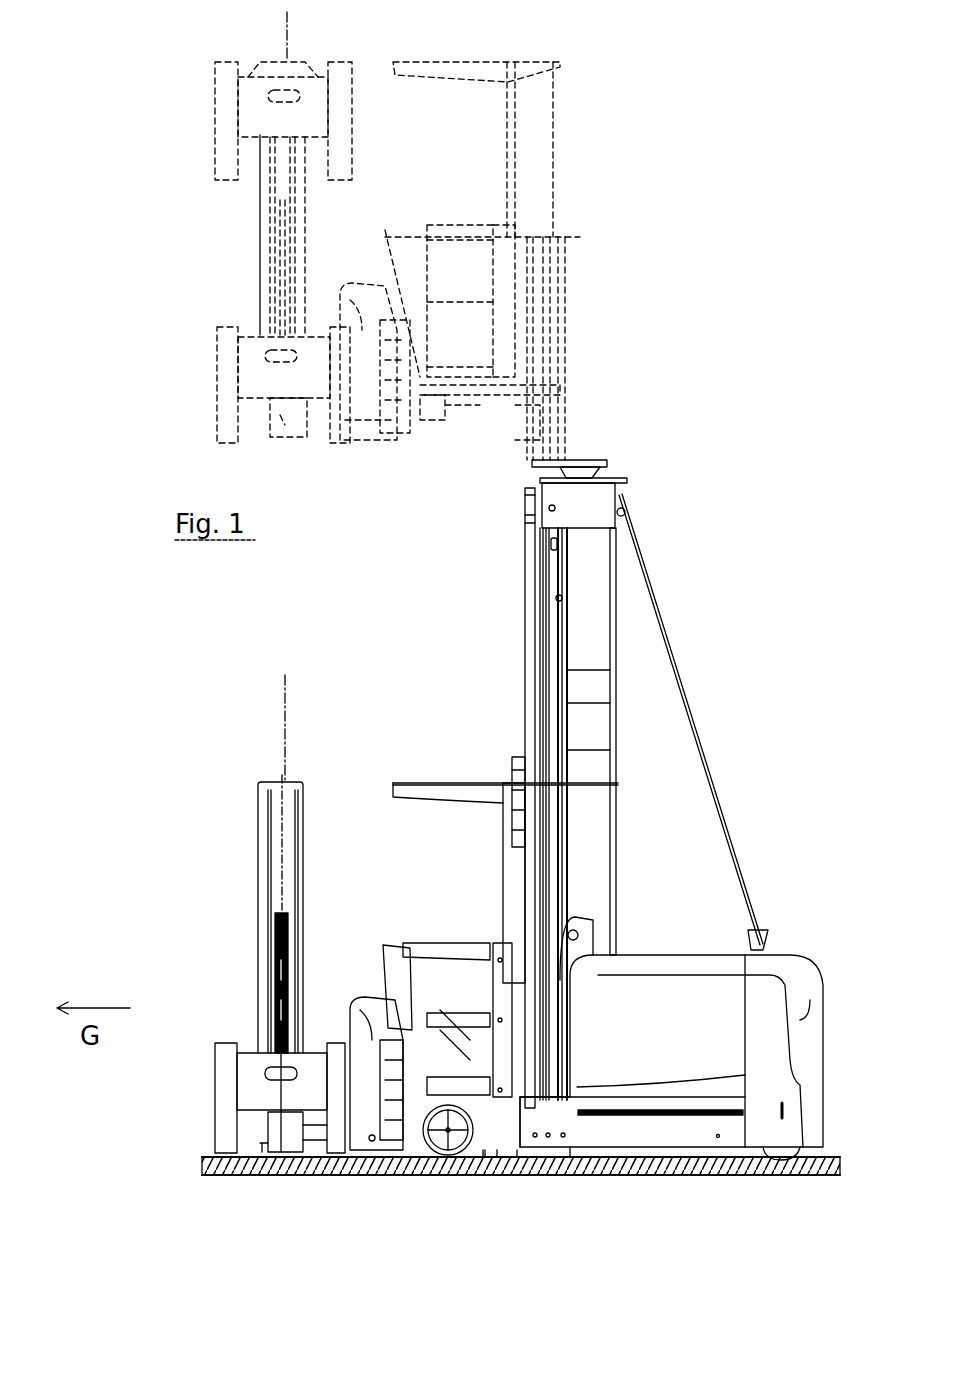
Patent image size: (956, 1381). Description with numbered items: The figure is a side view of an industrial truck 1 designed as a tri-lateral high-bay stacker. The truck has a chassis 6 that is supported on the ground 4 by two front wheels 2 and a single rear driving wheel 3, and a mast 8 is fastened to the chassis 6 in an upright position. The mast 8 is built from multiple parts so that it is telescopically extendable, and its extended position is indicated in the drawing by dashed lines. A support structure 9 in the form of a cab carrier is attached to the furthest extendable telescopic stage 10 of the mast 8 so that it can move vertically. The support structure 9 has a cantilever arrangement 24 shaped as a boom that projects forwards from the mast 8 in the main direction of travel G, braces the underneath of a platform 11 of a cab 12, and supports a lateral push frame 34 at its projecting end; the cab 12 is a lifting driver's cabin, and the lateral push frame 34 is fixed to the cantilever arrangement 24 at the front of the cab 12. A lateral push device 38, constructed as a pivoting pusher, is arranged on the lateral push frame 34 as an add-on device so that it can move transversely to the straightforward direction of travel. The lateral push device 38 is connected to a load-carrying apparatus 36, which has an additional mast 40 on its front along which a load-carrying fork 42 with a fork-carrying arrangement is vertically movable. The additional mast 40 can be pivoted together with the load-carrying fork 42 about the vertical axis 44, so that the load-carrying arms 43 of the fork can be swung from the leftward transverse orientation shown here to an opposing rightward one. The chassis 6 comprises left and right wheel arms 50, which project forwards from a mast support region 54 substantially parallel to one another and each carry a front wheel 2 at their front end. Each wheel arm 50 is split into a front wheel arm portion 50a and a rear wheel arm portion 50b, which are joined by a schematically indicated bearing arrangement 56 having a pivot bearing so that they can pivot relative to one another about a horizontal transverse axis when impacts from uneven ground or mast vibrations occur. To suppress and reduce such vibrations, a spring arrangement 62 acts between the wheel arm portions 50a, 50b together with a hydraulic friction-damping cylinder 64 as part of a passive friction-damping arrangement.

The industrial truck 1 is at (720, 734).
The front wheels 2 is at (455, 1175).
The rear driving wheel 3 is at (770, 1177).
The ground 4 is at (220, 1168).
The chassis 6 is at (597, 1175).
The mast 8 is at (522, 655).
The support structure 9 is at (488, 428).
The furthest extendable telescopic stage 10 is at (605, 460).
The platform 11 is at (463, 387).
The cab 12 is at (452, 940).
The cantilever arrangement 24 is at (477, 407).
The lateral push frame 34 is at (430, 1157).
The load-carrying apparatus 36 is at (262, 1145).
The lateral push device 38 is at (363, 1030).
The additional mast 40 is at (262, 848).
The load-carrying fork 42 is at (247, 1090).
The load-carrying arms 43 is at (222, 1143).
The vertical axis 44 is at (283, 716).
The wheel arms 50 is at (528, 1122).
The front wheel arm portion 50a is at (485, 1175).
The rear wheel arm portion 50b is at (570, 1175).
The mast support region 54 is at (567, 1075).
The bearing arrangement 56 is at (517, 1175).
The spring arrangement 62 is at (497, 1175).
The hydraulic friction-damping cylinder 64 is at (483, 1175).